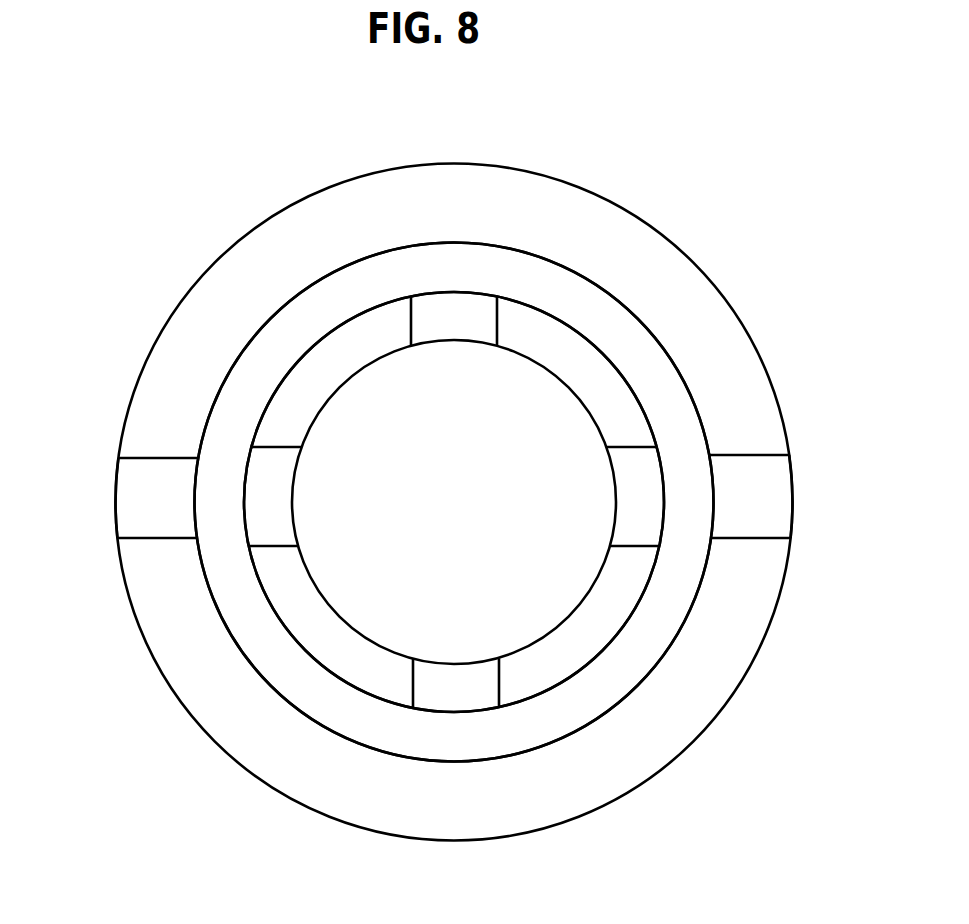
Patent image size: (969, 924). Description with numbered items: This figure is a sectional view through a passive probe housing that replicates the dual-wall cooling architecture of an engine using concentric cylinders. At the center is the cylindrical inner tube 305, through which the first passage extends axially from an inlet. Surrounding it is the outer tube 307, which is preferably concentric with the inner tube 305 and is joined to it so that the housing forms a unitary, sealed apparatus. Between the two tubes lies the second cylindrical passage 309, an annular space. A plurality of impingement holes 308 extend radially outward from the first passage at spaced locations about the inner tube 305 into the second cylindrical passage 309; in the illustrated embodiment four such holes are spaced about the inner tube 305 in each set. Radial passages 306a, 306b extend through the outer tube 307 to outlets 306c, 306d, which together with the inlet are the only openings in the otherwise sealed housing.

The inner tube 305 is at (290, 420).
The radial passage 306a is at (150, 517).
The radial passage 306b is at (753, 497).
The outlet 306c is at (117, 491).
The outlet 306d is at (793, 475).
The outer tube 307 is at (287, 248).
The impingement holes 308 is at (435, 323).
The second cylindrical passage 309 is at (262, 632).